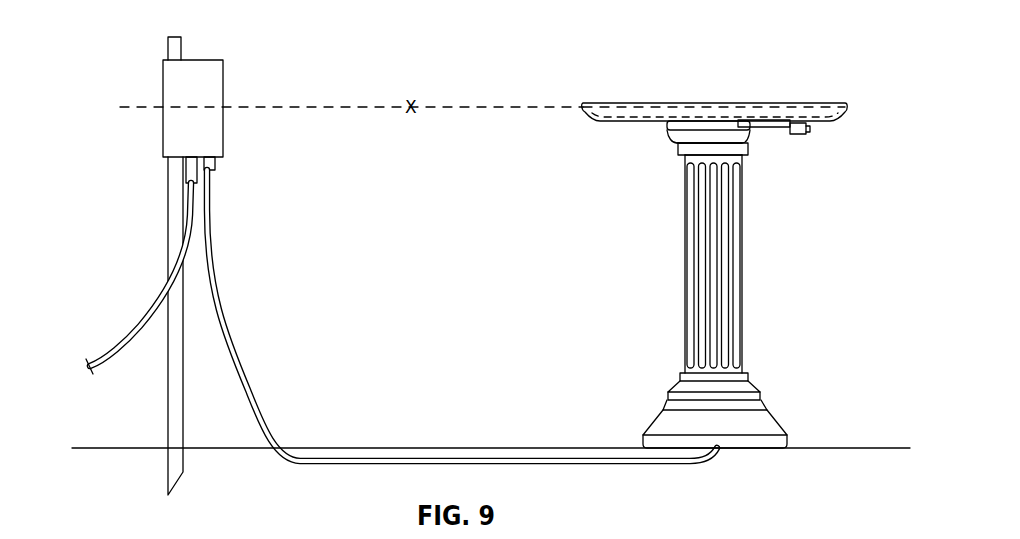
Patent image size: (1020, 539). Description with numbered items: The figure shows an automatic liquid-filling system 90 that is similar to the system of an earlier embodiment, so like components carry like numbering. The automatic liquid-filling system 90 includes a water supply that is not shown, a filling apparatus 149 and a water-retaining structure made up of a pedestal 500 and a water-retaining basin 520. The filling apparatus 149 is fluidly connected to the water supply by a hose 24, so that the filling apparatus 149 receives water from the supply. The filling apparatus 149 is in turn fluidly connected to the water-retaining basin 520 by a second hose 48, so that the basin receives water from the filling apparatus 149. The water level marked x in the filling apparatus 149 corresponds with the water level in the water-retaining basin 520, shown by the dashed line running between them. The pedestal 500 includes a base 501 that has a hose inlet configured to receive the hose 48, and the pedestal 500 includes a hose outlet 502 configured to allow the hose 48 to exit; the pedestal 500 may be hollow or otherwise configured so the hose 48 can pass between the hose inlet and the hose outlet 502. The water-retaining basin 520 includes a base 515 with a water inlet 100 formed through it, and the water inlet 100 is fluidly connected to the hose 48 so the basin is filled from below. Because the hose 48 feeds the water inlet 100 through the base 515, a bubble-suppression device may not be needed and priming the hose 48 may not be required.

The automatic liquid-filling system 90 is at (150, 32).
The filling apparatus 149 is at (212, 73).
The hose 24 is at (140, 328).
The hose 48 is at (240, 375).
The water-retaining basin 520 is at (600, 100).
The base 515 is at (600, 124).
The water inlet 100 is at (812, 105).
The hose outlet 502 is at (760, 128).
The pedestal 500 is at (732, 317).
The base 501 is at (723, 450).